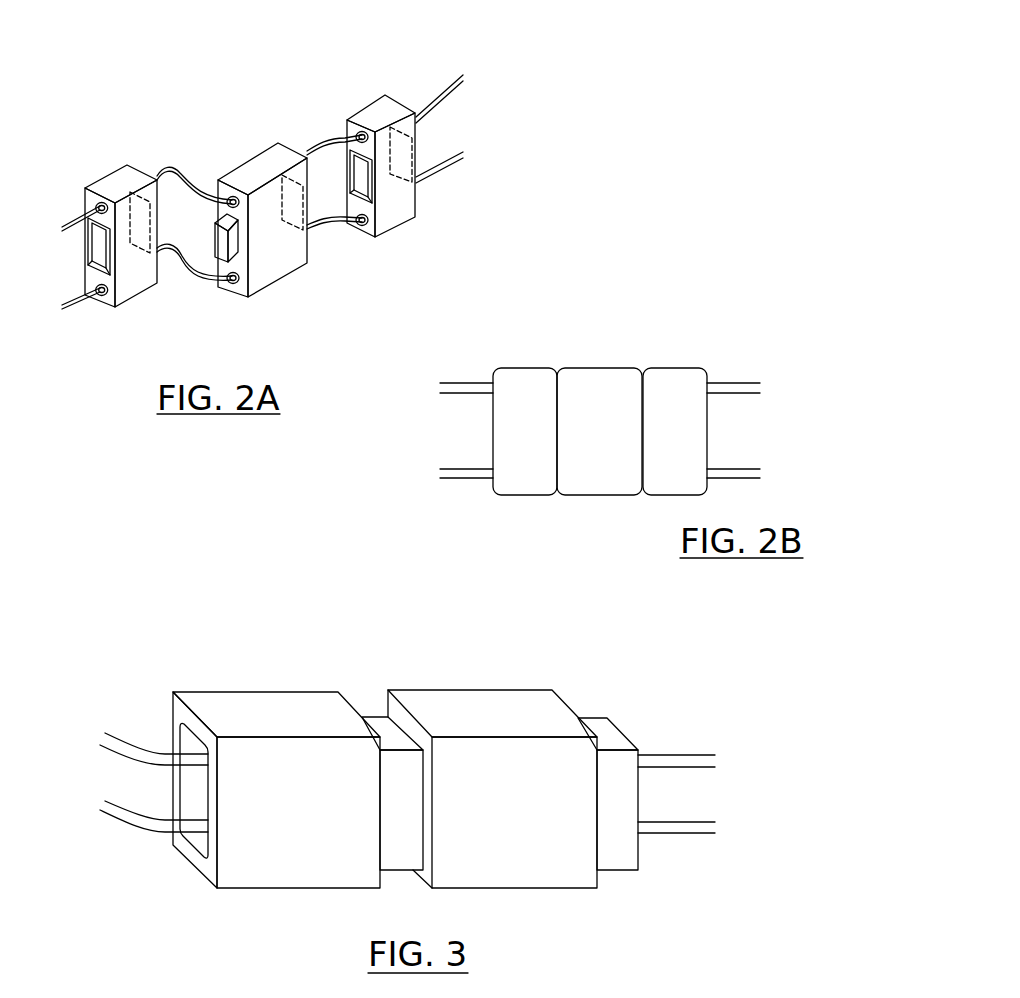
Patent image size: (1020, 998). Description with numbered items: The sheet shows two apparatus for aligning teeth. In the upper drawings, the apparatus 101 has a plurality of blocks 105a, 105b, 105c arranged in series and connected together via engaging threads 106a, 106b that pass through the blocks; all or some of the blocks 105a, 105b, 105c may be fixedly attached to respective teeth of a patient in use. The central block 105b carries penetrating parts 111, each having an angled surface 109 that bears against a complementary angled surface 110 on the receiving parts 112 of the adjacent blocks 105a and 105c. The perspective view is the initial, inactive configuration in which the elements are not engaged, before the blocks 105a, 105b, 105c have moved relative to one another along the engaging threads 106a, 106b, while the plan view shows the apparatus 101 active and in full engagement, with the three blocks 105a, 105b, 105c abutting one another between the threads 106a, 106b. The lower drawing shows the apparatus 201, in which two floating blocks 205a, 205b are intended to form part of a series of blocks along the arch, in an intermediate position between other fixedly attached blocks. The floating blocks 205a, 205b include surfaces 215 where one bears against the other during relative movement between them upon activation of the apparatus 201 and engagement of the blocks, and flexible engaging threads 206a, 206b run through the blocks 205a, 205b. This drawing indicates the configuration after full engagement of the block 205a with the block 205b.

In FIG. 2A, the apparatus for aligning teeth 101 is at (96, 162).
In FIG. 2A, the block 105a is at (140, 293).
In FIG. 2B, the block 105a is at (527, 495).
In FIG. 2A, the block 105b is at (287, 258).
In FIG. 2B, the block 105b is at (602, 495).
In FIG. 2A, the block 105c is at (417, 202).
In FIG. 2B, the block 105c is at (672, 398).
In FIG. 2A, the engaging thread 106a is at (432, 85).
In FIG. 2B, the engaging thread 106a is at (732, 383).
In FIG. 2A, the engaging thread 106b is at (447, 173).
In FIG. 2B, the engaging thread 106b is at (732, 480).
In FIG. 2A, the angled surface 109 is at (207, 229).
In FIG. 2A, the complementary angled surface 110 is at (352, 162).
In FIG. 2A, the penetrating part 111 is at (312, 196).
In FIG. 2A, the receiving part 112 is at (150, 212).
In FIG. 3, the apparatus for aligning teeth 201 is at (249, 660).
In FIG. 3, the floating block 205a is at (253, 890).
In FIG. 3, the floating block 205b is at (557, 890).
In FIG. 3, the flexible engaging thread 206a is at (135, 753).
In FIG. 3, the flexible engaging thread 206b is at (120, 820).
In FIG. 3, the surface 215 is at (398, 775).